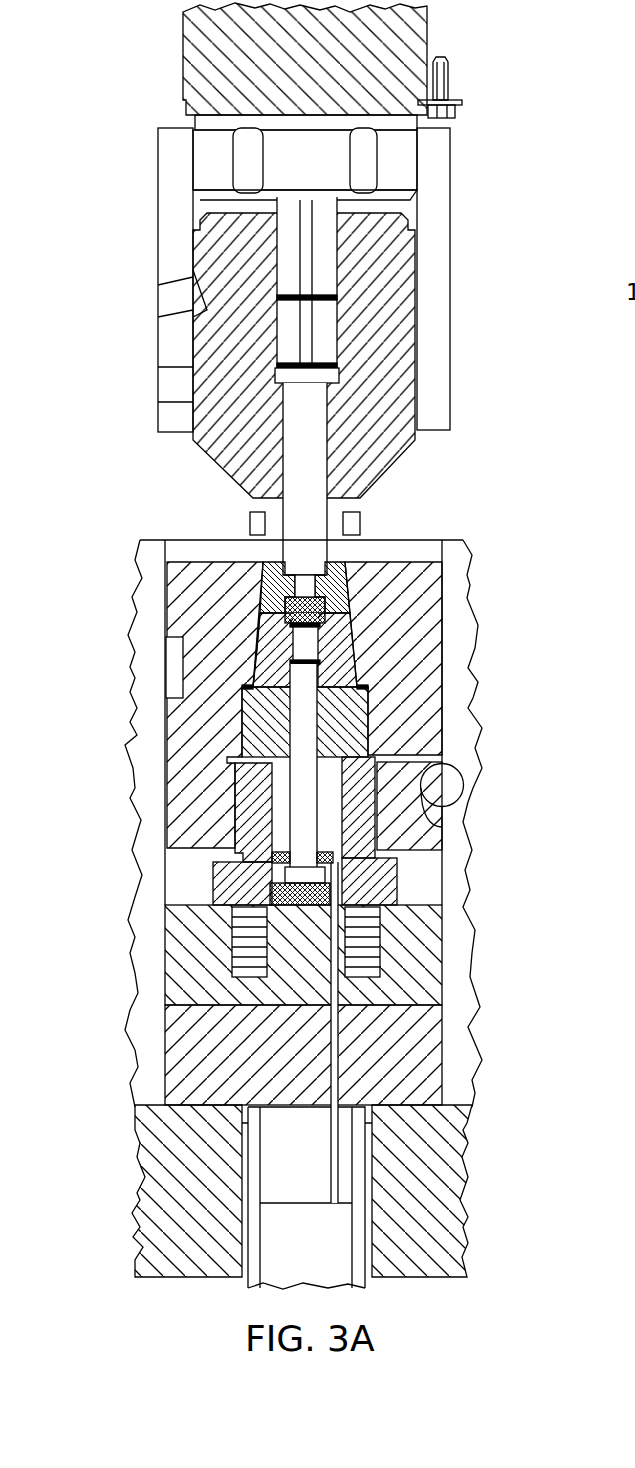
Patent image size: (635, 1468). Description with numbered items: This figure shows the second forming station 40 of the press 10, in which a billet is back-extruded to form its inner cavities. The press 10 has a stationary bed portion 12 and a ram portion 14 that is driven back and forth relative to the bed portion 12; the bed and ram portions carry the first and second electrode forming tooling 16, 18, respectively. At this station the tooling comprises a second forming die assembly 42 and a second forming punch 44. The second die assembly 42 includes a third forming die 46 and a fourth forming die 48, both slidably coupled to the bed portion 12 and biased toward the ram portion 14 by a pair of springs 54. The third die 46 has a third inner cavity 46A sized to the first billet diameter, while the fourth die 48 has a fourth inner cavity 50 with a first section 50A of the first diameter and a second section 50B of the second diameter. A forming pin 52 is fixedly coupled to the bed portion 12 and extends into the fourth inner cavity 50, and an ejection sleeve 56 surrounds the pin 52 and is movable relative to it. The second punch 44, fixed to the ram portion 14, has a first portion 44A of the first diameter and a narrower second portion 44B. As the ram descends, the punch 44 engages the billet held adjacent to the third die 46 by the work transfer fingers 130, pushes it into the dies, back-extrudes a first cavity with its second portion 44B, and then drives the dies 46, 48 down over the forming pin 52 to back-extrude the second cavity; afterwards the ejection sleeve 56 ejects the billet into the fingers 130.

The press 10 is at (163, 497).
The bed portion 12 is at (150, 1196).
The ram portion 14 is at (177, 162).
The first electrode forming tooling 16 is at (476, 277).
The second electrode forming tooling 18 is at (532, 793).
The second forming station 40 is at (474, 480).
The second forming die assembly 42 is at (388, 633).
The second forming punch 44 is at (303, 468).
The first portion of the second punch 44A is at (312, 550).
The second portion of the second punch 44B is at (305, 585).
The third forming die 46 is at (348, 606).
The third inner cavity 46A is at (283, 600).
The fourth forming die 48 is at (365, 688).
The fourth inner cavity 50 is at (257, 652).
The first section of the fourth inner cavity 50A is at (258, 630).
The second section of the fourth inner cavity 50B is at (250, 700).
The forming pin 52 is at (308, 798).
The springs 54 is at (357, 977).
The ejection sleeve 56 is at (275, 857).
The work transfer fingers 130 is at (249, 520).